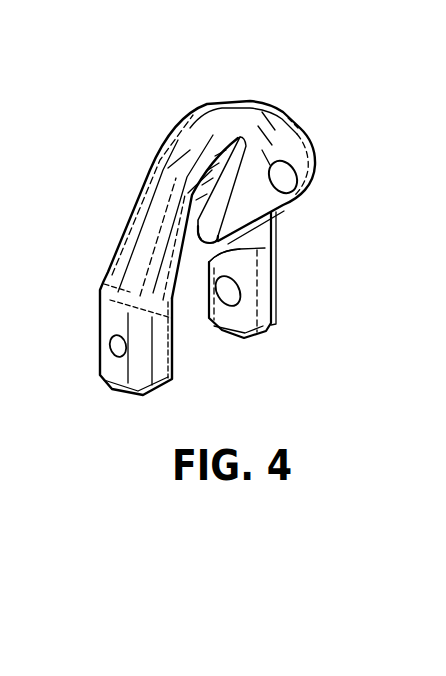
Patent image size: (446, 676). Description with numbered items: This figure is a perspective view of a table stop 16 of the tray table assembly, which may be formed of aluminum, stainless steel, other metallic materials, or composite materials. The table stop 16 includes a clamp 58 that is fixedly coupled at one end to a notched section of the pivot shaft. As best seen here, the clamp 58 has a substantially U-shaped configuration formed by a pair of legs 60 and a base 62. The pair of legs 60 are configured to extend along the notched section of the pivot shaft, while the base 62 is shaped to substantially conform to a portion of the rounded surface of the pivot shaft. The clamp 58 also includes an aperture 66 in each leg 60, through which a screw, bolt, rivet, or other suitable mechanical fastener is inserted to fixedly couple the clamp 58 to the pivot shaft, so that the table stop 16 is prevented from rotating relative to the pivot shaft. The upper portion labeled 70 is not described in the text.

The hook arm 70 is at (170, 140).
The clamp 58 is at (163, 322).
The table stop 16 is at (261, 287).
The base 62 is at (172, 300).
The legs 60 is at (113, 323).
The aperture 66 is at (117, 348).